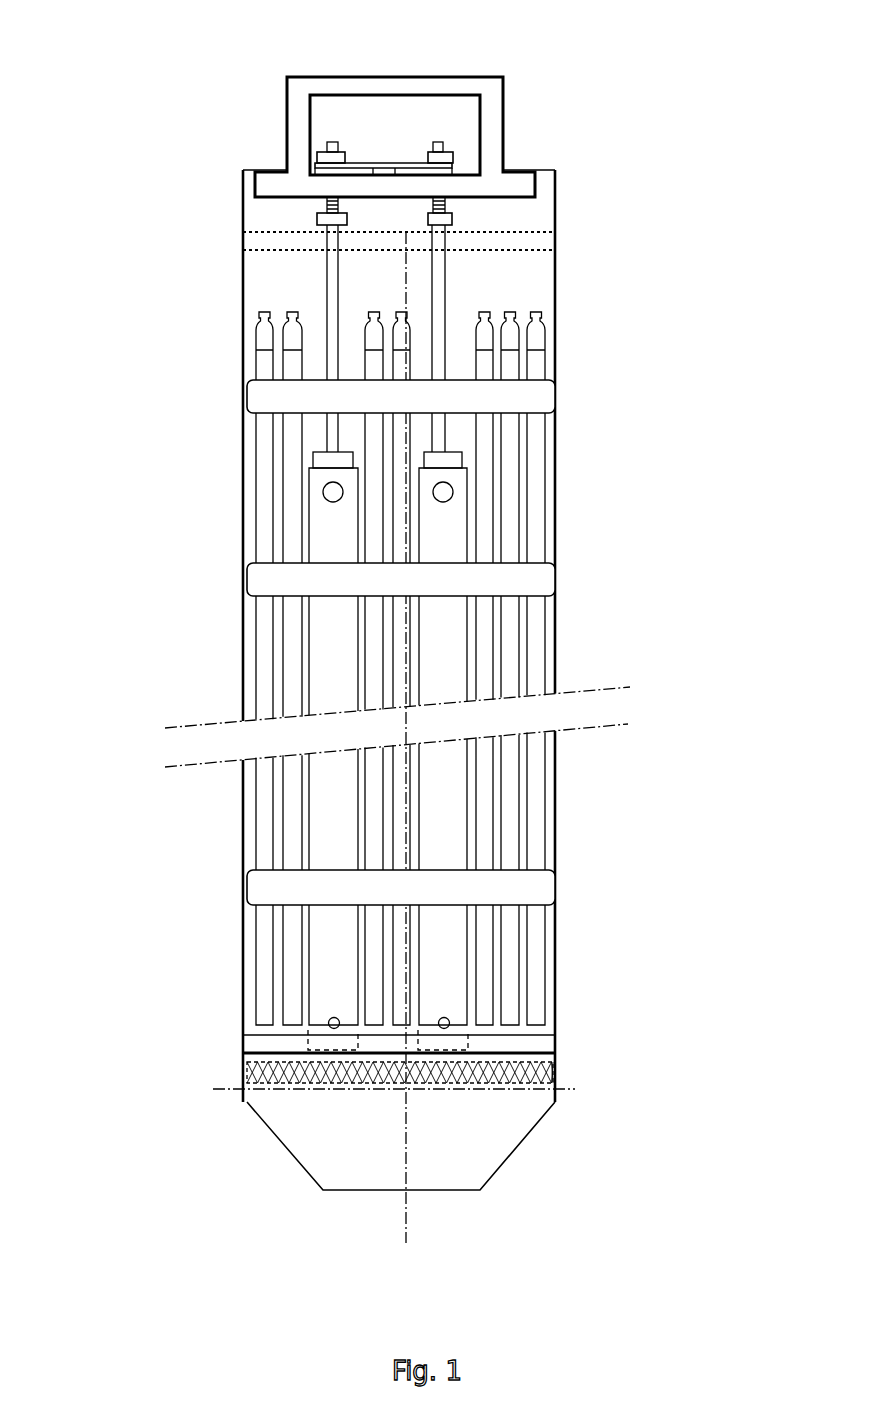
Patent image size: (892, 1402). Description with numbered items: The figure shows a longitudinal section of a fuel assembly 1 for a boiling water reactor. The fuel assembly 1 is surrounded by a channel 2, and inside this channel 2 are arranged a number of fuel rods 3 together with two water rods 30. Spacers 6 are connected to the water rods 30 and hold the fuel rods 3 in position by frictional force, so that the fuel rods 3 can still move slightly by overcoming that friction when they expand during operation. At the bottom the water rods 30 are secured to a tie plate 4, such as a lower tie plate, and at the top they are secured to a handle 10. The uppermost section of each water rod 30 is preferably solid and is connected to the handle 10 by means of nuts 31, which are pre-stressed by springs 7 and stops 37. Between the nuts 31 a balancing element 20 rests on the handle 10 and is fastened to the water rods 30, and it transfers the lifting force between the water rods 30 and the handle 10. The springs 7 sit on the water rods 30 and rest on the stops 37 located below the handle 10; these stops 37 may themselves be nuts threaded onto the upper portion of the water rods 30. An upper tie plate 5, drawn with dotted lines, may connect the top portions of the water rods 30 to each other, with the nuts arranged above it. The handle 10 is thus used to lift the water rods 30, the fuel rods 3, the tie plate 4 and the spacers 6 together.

The fuel assembly 1 is at (548, 130).
The channel 2 is at (240, 632).
The fuel rods 3 is at (552, 343).
The tie plate 4 is at (265, 1046).
The upper tie plate 5 is at (528, 243).
The spacers 6 is at (538, 400).
The springs 7 is at (429, 208).
The handle 10 is at (300, 163).
The balancing element 20 is at (382, 168).
The water rods 30 is at (327, 145).
The nuts 31 is at (330, 155).
The stops 37 is at (318, 220).